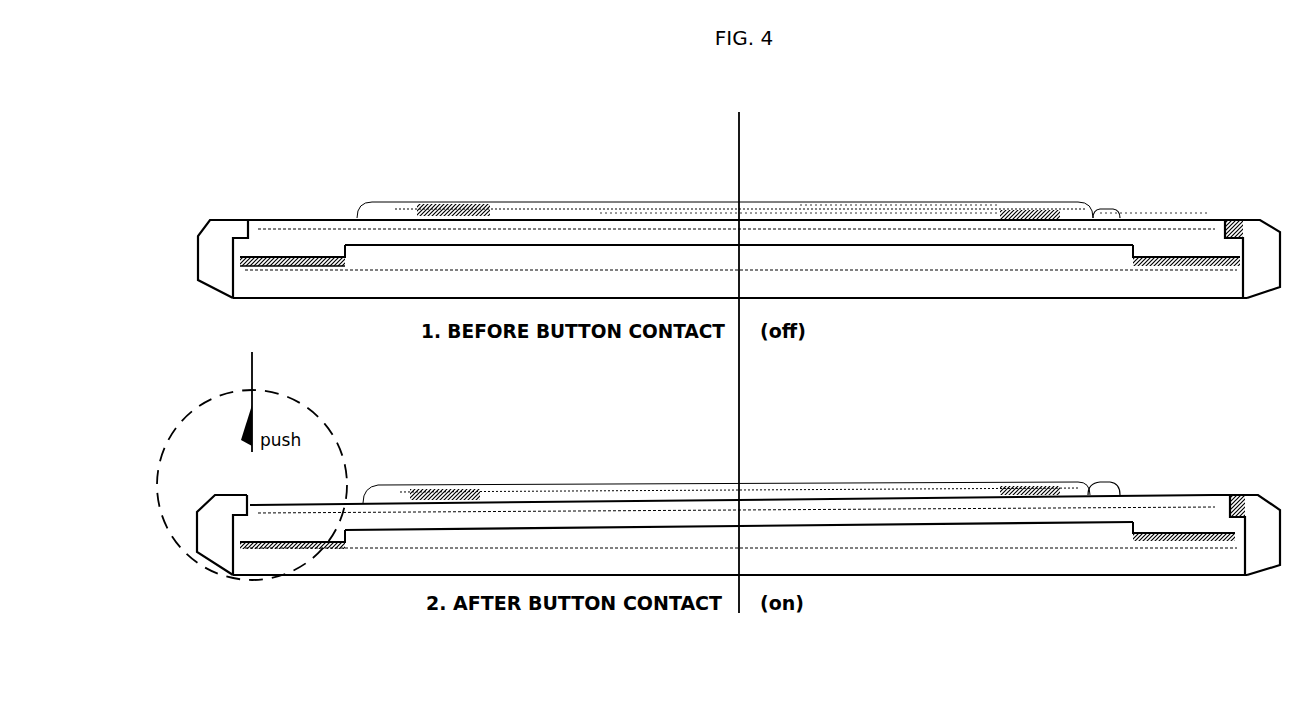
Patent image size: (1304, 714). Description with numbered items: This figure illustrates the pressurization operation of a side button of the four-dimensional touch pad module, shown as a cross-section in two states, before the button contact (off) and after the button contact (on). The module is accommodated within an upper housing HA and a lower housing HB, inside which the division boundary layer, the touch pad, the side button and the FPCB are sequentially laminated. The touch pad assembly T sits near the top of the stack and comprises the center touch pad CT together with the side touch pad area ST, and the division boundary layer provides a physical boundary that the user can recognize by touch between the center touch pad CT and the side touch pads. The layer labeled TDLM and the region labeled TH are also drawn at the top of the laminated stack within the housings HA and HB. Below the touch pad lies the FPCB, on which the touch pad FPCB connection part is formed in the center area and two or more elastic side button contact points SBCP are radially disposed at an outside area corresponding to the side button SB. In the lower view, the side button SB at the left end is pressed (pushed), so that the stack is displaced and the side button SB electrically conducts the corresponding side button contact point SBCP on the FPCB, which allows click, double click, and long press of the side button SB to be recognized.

The upper housing HA is at (219, 220).
The lower housing HB is at (1136, 290).
The side button SB is at (258, 248).
The side button contact point SBCP is at (291, 261).
The element FPCB is at (990, 268).
The touch sensor (CT+ST) T is at (537, 220).
The center touch pad CT is at (747, 222).
The side touch layer ST is at (1150, 222).
The touch display module TDLM is at (900, 204).
The touch hole TH is at (1008, 242).